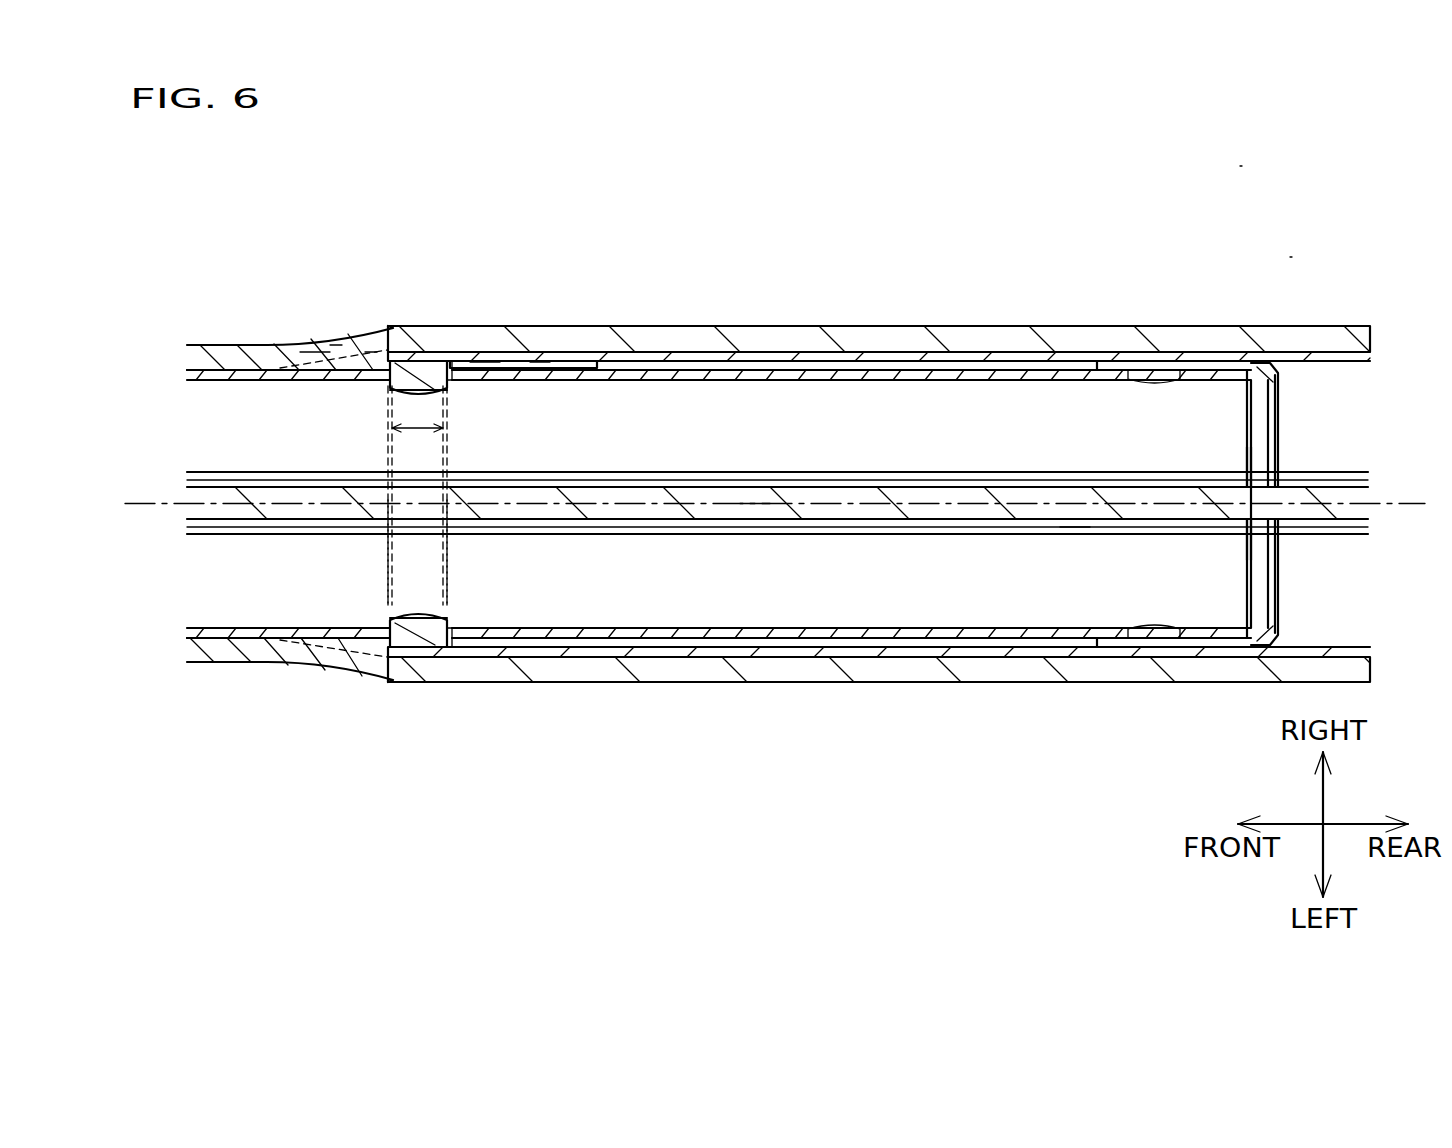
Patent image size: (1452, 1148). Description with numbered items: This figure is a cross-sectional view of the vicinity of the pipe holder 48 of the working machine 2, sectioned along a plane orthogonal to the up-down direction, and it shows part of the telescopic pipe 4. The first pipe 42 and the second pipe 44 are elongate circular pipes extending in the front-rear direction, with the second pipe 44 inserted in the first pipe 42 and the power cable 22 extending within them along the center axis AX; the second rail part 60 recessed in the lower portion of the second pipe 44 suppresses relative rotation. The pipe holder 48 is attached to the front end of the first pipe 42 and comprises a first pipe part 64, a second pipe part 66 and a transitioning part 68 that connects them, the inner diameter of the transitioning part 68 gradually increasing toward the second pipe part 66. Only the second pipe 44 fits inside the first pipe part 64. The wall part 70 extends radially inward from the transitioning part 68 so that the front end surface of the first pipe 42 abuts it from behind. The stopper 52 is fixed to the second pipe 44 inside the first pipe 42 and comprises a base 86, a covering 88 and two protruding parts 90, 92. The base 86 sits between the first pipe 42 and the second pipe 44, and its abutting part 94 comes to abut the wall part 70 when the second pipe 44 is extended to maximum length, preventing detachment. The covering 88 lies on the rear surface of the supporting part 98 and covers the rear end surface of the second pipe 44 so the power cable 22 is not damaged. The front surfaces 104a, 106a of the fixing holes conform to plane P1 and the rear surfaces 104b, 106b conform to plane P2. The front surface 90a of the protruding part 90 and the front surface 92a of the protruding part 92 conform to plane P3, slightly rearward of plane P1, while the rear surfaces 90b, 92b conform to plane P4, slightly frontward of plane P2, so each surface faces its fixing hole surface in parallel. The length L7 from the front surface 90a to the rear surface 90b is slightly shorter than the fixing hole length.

The working machine 2 is at (1247, 146).
The telescopic pipe 4 is at (1290, 234).
The power cable 22 is at (955, 510).
The first pipe 42 is at (1325, 357).
The second pipe 44 is at (1083, 367).
The pipe holder 48 is at (1208, 340).
The stopper 52 is at (567, 365).
The second rail part 60 is at (1075, 522).
The first pipe part 64 is at (238, 355).
The second pipe part 66 is at (878, 340).
The transitioning part 68 is at (343, 342).
The wall part 70 is at (370, 358).
The base 86 is at (593, 378).
The covering 88 is at (1258, 645).
The protruding part 90 is at (478, 400).
The front surface of the protruding part 90a is at (395, 363).
The rear surface of the protruding part 90b is at (438, 367).
The protruding part 92 is at (478, 624).
The front surface of the protruding part 92a is at (395, 650).
The rear surface of the protruding part 92b is at (440, 642).
The abutting part 94 is at (540, 363).
The supporting part 98 is at (1182, 645).
The front surface of the fixing hole 104a is at (330, 350).
The rear surface of the fixing hole 104b is at (487, 370).
The front surface of the fixing hole 106a is at (360, 637).
The rear surface of the fixing hole 106b is at (487, 640).
The center axis AX is at (752, 505).
The length L7 is at (423, 428).
The plane P1 is at (388, 462).
The plane P2 is at (447, 443).
The plane P3 is at (388, 578).
The plane P4 is at (447, 583).